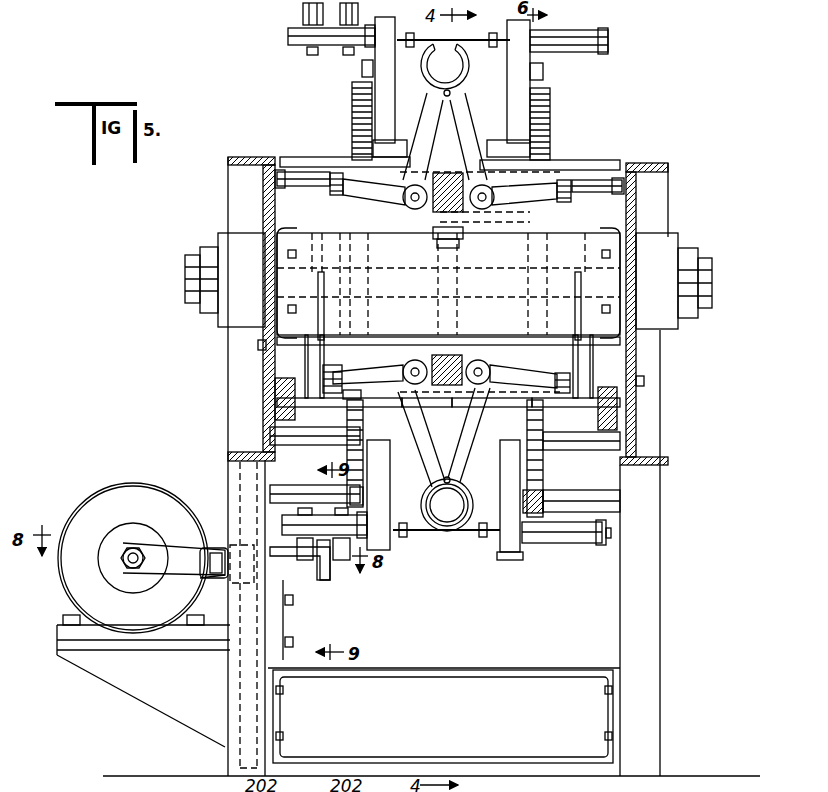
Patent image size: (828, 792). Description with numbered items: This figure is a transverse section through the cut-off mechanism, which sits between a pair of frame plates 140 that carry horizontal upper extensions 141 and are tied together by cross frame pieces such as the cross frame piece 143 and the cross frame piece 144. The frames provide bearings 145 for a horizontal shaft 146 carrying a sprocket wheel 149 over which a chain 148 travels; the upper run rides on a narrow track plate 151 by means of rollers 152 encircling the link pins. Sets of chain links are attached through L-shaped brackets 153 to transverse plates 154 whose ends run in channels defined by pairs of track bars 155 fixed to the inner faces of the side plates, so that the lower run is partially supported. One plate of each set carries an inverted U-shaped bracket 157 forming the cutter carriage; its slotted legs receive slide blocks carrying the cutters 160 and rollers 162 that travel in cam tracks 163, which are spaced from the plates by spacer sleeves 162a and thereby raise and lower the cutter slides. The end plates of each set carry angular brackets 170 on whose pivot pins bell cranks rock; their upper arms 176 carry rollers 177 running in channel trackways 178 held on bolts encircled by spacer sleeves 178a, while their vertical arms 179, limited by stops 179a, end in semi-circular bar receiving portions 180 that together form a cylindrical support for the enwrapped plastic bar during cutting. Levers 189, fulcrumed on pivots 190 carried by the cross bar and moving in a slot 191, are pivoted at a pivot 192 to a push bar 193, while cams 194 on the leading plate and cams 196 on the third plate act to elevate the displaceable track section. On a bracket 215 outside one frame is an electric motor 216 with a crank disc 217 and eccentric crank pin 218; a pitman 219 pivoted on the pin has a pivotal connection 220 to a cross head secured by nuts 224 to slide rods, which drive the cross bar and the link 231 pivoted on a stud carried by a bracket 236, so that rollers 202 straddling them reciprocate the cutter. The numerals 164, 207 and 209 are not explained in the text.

The frame plates 140 is at (230, 688).
The upper extensions 141 is at (263, 368).
The cross frame piece 143 is at (300, 240).
The cross frame piece 144 is at (444, 704).
The bearings 145 is at (228, 242).
The shaft 146 is at (493, 268).
The chain 148 is at (463, 200).
The sprocket wheel 149 is at (442, 337).
The track plate 151 is at (433, 233).
The rollers 152 is at (430, 170).
The L-shaped brackets 153 is at (540, 160).
The plates 154 is at (296, 157).
The track bars 155 is at (275, 385).
The inverted U-shaped bracket 157 is at (518, 90).
The cutters 160 is at (474, 537).
The rollers 162 is at (362, 68).
The spacer sleeves 162a is at (303, 485).
The cam tracks 163 is at (363, 455).
The rack 164 is at (352, 103).
The angular bracket 170 is at (495, 192).
The upper arms 176 is at (410, 209).
The rollers 177 is at (343, 185).
The channel trackways 178 is at (318, 186).
The spacer sleeves 178a is at (280, 170).
The arms 179 is at (462, 120).
The stops 179a is at (444, 95).
The bar receiving portions 180 is at (440, 82).
The levers 189 is at (312, 300).
The pivots 190 is at (324, 278).
The slot 191 is at (318, 283).
The pivot 192 is at (601, 283).
The push bar 193 is at (258, 345).
The cams 194 is at (355, 399).
The cams 196 is at (300, 407).
The rollers 202 is at (303, 14).
The rod 207 is at (292, 36).
The rod 209 is at (575, 35).
The bracket 215 is at (148, 700).
The electric motor 216 is at (138, 486).
The crank disc 217 is at (108, 580).
The crank pin 218 is at (124, 550).
The pitman 219 is at (175, 545).
The pivotal connection 220 is at (205, 578).
The nuts 224 is at (216, 548).
The link 231 is at (325, 580).
The bracket 236 is at (308, 580).